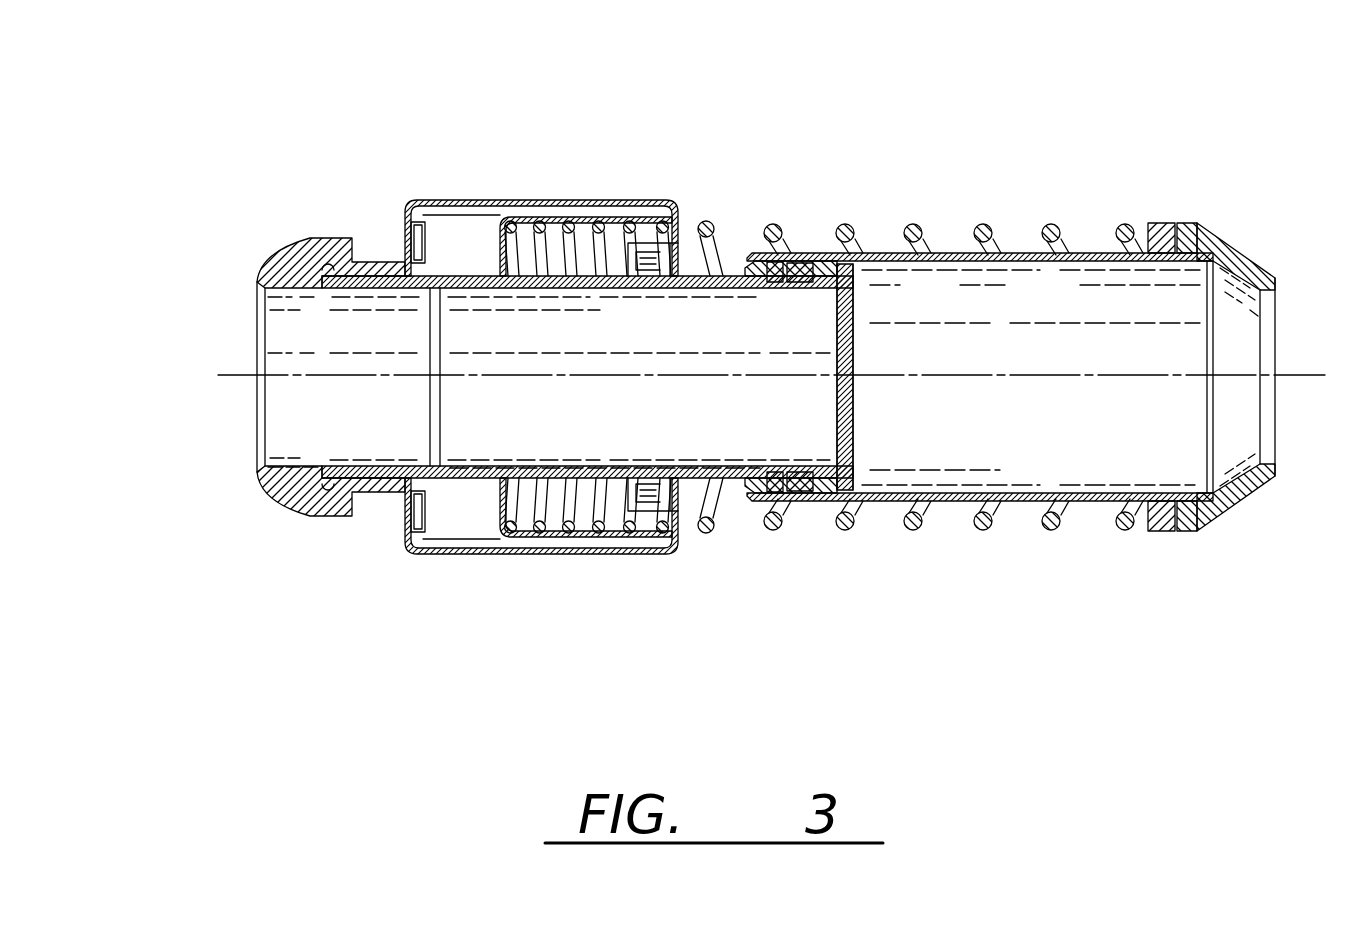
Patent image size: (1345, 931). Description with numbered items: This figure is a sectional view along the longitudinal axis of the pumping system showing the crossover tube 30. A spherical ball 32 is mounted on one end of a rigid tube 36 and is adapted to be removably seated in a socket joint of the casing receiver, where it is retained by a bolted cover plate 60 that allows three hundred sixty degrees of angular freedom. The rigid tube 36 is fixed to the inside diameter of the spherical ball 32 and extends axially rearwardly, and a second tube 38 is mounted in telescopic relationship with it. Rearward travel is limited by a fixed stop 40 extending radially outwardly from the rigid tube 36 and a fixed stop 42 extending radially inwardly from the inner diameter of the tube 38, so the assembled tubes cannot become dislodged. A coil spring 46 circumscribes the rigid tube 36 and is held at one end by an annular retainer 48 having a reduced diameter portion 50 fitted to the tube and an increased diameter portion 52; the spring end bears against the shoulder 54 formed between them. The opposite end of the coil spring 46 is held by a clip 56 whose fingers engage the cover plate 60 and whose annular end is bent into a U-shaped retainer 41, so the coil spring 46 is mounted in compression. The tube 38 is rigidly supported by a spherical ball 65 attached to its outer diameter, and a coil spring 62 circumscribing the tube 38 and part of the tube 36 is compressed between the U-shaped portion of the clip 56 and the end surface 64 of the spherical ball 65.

The crossover tube 30 is at (530, 588).
The spherical ball 32 is at (300, 508).
The rigid tube 36 is at (565, 470).
The second tube 38 is at (1097, 250).
The fixed stop 40 is at (838, 270).
The retainer 41 is at (690, 218).
The fixed stop 42 is at (796, 265).
The coil spring 46 is at (614, 560).
The annular retainer 48 is at (525, 214).
The reduced diameter portion 50 is at (415, 203).
The increased diameter portion 52 is at (547, 215).
The shoulder 54 is at (490, 238).
The clip 56 is at (650, 212).
The cover plate 60 is at (438, 560).
The coil spring 62 is at (1058, 530).
The end surface 64 is at (1138, 530).
The spherical ball 65 is at (1243, 232).